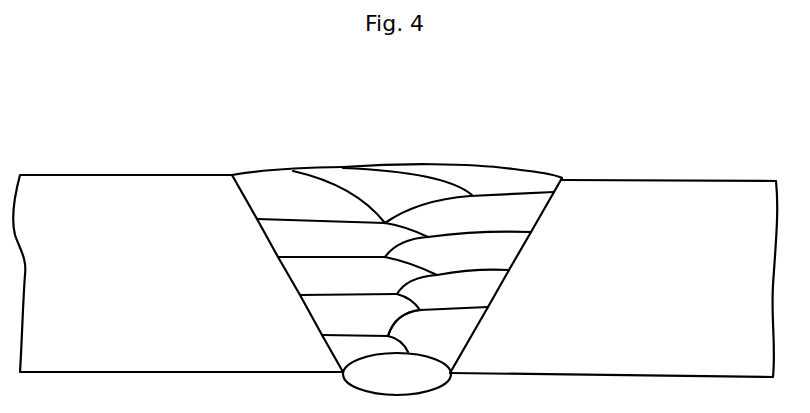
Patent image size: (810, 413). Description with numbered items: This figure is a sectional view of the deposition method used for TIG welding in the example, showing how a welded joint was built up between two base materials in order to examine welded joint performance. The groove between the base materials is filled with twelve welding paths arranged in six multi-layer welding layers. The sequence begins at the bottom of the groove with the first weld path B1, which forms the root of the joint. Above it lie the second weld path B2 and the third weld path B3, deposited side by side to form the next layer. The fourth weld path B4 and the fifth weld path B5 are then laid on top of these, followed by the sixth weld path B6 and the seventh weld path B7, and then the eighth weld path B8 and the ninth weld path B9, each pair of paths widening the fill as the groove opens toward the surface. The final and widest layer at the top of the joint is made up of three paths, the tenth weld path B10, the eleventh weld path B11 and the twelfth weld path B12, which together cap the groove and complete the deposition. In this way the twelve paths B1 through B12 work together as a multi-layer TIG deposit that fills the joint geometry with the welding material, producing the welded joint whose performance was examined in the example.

The first weld path B1 is at (397, 374).
The second weld path B2 is at (365, 352).
The third weld path B3 is at (438, 340).
The fourth weld path B4 is at (360, 315).
The fifth weld path B5 is at (453, 290).
The sixth weld path B6 is at (357, 276).
The seventh weld path B7 is at (458, 253).
The eighth weld path B8 is at (342, 238).
The ninth weld path B9 is at (469, 214).
The tenth weld path B10 is at (308, 195).
The eleventh weld path B11 is at (382, 195).
The twelfth weld path B12 is at (452, 181).